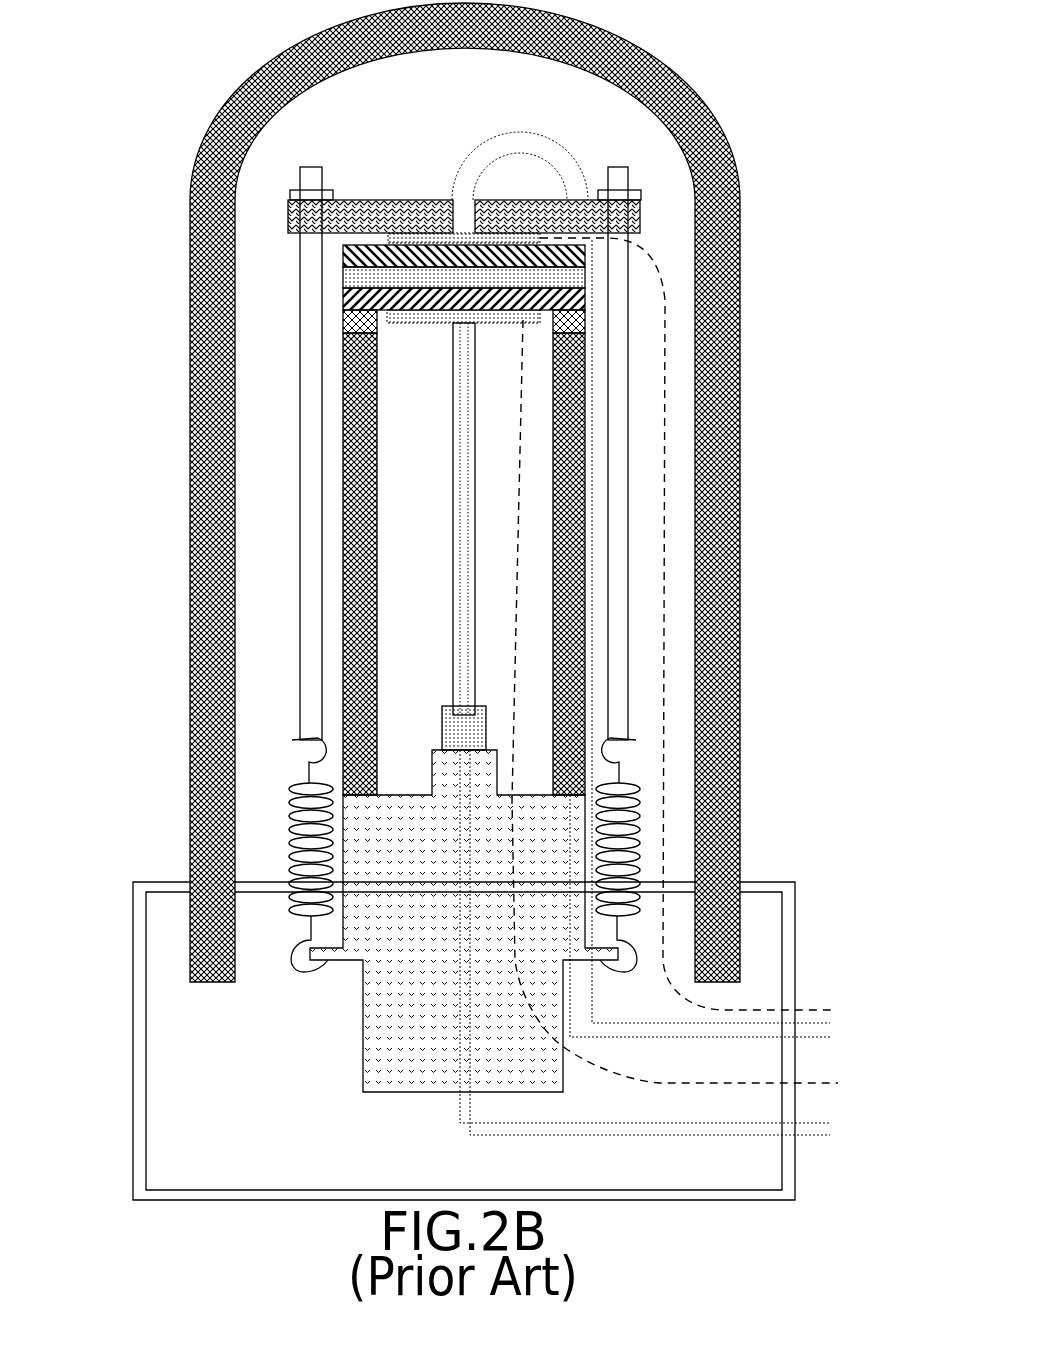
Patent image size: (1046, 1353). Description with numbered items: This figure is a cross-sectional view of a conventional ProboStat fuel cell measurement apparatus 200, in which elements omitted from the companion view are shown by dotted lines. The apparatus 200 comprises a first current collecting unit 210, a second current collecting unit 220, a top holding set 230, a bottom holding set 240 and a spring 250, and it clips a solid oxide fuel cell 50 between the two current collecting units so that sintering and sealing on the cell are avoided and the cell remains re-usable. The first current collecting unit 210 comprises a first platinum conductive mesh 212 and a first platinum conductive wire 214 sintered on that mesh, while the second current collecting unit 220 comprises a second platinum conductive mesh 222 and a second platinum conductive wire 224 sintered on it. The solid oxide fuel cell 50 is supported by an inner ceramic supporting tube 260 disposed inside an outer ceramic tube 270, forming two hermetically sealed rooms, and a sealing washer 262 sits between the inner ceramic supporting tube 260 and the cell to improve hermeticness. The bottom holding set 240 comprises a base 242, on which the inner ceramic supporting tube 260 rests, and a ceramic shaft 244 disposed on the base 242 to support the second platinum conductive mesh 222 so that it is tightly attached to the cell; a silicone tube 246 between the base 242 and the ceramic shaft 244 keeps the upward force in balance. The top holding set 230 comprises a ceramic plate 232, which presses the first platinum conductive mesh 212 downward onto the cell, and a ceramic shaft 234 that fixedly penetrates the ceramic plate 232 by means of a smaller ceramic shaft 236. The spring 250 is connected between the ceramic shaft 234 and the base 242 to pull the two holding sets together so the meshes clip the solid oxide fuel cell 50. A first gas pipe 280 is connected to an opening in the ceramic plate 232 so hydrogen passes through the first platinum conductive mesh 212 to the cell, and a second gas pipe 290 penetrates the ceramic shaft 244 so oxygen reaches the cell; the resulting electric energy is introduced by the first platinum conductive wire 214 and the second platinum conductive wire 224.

The fuel cell measurement apparatus 200 is at (789, 1283).
The first current collecting unit 210 is at (833, 210).
The first platinum conductive mesh 212 is at (497, 243).
The first platinum conductive wire 214 is at (645, 290).
The second current collecting unit 220 is at (833, 378).
The second platinum conductive mesh 222 is at (507, 317).
The second platinum conductive wire 224 is at (523, 462).
The top holding set 230 is at (92, 168).
The ceramic plate 232 is at (320, 222).
The ceramic shaft 234 is at (300, 247).
The smaller ceramic shaft 236 is at (287, 197).
The bottom holding set 240 is at (92, 620).
The base 242 is at (427, 852).
The ceramic shaft 244 is at (455, 635).
The silicone tube 246 is at (450, 735).
The spring 250 is at (290, 823).
The inner ceramic supporting tube 260 is at (345, 365).
The sealing washer 262 is at (345, 322).
The outer ceramic tube 270 is at (213, 412).
The first gas pipe 280 is at (832, 1028).
The second gas pipe 290 is at (832, 1128).
The solid oxide fuel cell 50 is at (340, 310).